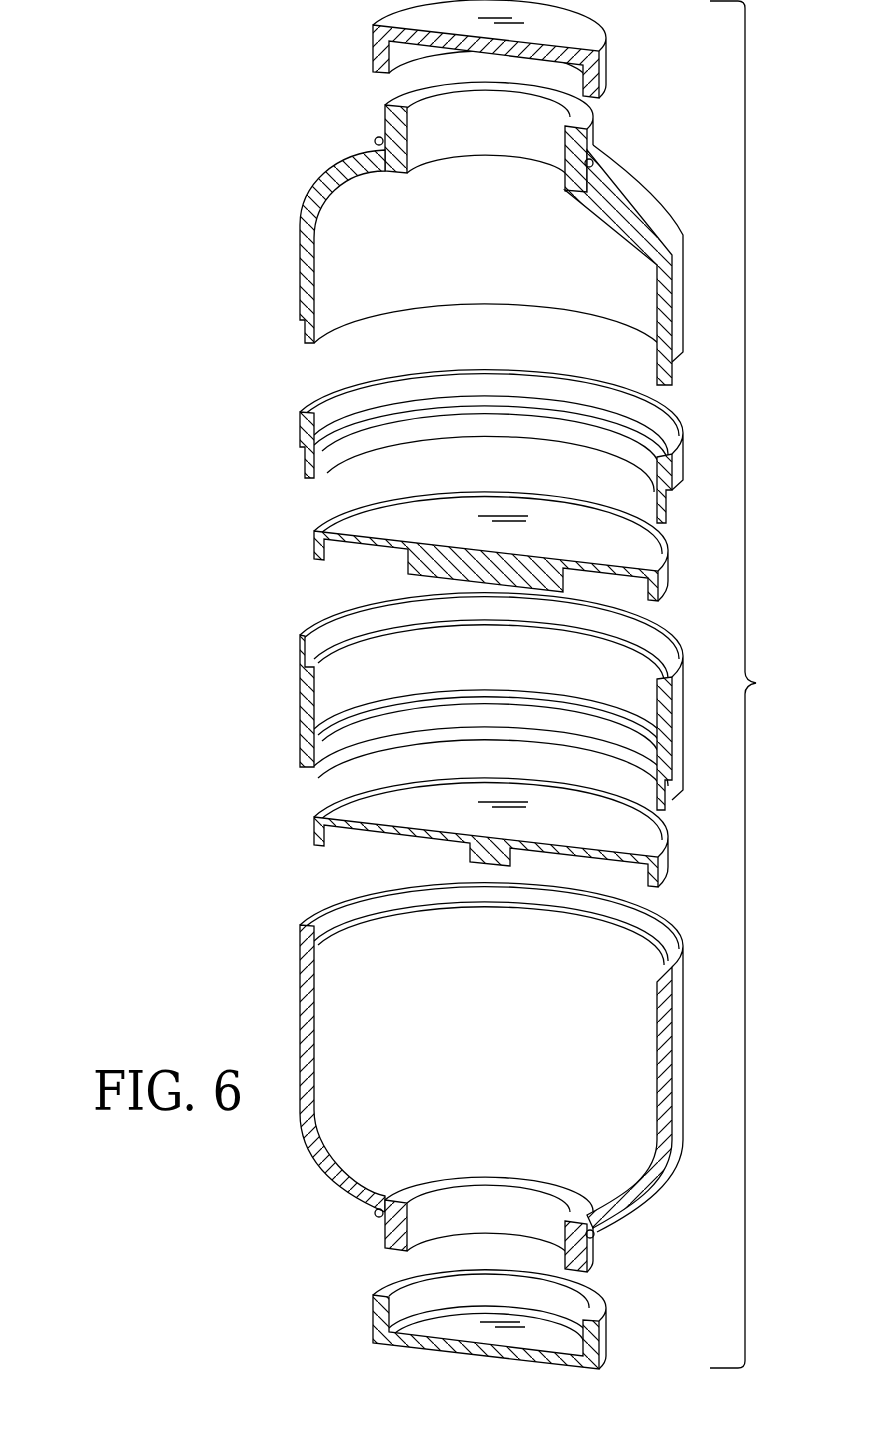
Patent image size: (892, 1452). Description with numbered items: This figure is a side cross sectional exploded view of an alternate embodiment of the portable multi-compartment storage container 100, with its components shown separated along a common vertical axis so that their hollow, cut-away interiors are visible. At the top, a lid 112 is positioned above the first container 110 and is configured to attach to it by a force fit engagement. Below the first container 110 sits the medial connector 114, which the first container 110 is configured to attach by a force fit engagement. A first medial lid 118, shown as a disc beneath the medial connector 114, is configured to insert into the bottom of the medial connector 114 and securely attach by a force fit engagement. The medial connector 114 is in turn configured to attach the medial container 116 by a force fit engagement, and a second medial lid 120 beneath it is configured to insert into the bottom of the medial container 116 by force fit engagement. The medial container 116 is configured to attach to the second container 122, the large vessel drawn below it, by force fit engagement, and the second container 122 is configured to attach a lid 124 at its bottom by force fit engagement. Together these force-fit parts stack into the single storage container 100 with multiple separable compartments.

The portable multi-compartment storage container 100 is at (764, 684).
The first container 110 is at (299, 207).
The lid 112 is at (373, 49).
The medial connector 114 is at (300, 437).
The medial container 116 is at (305, 685).
The first medial lid 118 is at (313, 538).
The second medial lid 120 is at (313, 837).
The second container 122 is at (300, 1005).
The lid 124 is at (373, 1311).